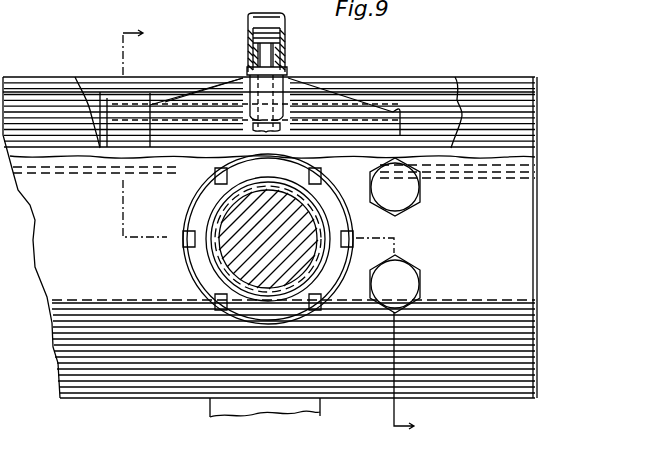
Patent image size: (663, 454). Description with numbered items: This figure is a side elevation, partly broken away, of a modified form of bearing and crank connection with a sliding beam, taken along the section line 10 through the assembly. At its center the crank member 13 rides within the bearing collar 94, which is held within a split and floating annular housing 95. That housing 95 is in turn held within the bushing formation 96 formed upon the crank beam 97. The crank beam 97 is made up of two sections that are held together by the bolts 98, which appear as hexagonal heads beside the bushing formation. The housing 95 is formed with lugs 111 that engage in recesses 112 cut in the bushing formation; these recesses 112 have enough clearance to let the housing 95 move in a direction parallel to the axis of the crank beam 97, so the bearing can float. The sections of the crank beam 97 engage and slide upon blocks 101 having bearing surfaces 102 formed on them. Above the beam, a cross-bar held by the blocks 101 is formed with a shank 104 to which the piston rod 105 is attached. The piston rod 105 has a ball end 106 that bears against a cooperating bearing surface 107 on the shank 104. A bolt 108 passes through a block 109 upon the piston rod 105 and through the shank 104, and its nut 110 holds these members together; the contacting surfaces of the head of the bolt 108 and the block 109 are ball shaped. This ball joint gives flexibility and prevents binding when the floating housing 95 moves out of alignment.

The section line 10 is at (266, 232).
The shaft 13 is at (227, 222).
The bearing collar 94 is at (218, 262).
The split and floating annular housing 95 is at (252, 303).
The bushing formation 96 is at (353, 221).
The crank beam 97 is at (538, 255).
The bolts 98 is at (403, 287).
The blocks 101 is at (124, 95).
The bearing surfaces 102 is at (404, 110).
The shank 104 is at (250, 83).
The piston rods 105 is at (284, 28).
The ball end 106 is at (287, 71).
The bearing surface 107 is at (247, 70).
The bolt 108 is at (266, 66).
The block 109 is at (288, 56).
The nut 110 is at (276, 128).
The lugs 111 is at (219, 304).
The recesses 112 is at (303, 304).